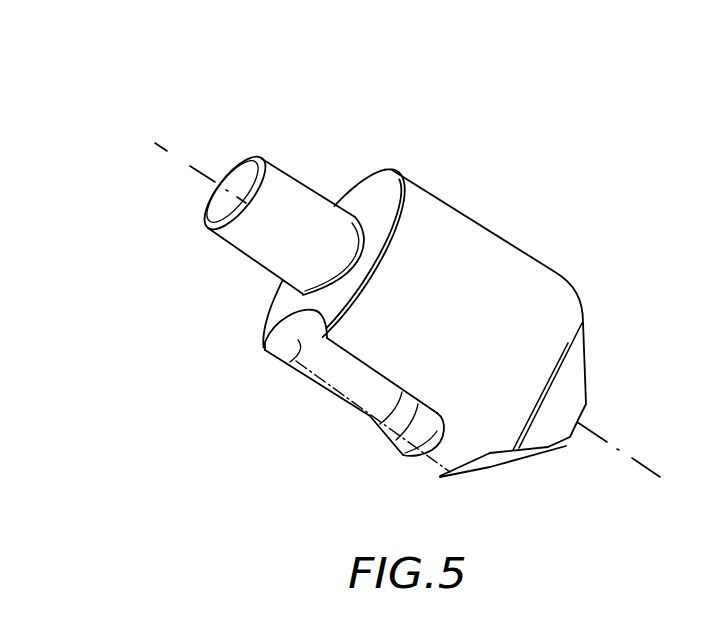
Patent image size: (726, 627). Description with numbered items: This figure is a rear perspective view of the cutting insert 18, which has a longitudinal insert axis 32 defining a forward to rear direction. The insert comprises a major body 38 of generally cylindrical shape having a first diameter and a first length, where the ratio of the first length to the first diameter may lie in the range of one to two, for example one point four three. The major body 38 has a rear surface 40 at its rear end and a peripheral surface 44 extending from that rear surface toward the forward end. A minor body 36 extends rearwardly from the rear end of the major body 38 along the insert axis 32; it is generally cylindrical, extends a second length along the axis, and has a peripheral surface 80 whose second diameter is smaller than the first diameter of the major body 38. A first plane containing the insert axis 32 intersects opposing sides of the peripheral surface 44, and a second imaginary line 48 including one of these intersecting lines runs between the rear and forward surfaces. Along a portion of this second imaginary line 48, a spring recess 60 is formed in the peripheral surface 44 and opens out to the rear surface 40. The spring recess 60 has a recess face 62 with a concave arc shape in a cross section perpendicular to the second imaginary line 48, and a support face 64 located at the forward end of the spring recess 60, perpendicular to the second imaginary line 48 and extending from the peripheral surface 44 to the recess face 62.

The cutting insert 18 is at (138, 64).
The longitudinal insert axis 32 is at (632, 457).
The minor body 36 is at (278, 137).
The peripheral surface 80 is at (282, 207).
The rear surface 40 is at (378, 189).
The major body 38 is at (484, 198).
The peripheral surface 44 is at (512, 293).
The second imaginary line 48 is at (367, 417).
The spring recess 60 is at (340, 404).
The recess face 62 is at (292, 362).
The support face 64 is at (407, 457).